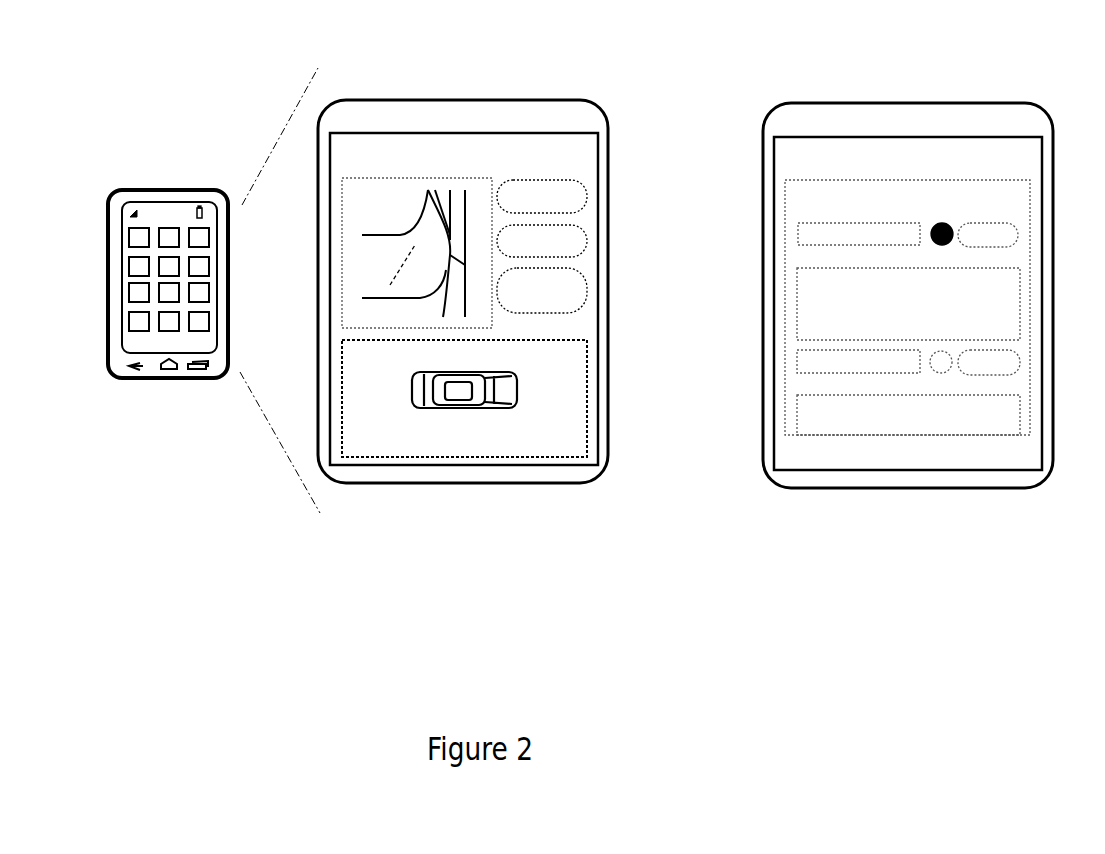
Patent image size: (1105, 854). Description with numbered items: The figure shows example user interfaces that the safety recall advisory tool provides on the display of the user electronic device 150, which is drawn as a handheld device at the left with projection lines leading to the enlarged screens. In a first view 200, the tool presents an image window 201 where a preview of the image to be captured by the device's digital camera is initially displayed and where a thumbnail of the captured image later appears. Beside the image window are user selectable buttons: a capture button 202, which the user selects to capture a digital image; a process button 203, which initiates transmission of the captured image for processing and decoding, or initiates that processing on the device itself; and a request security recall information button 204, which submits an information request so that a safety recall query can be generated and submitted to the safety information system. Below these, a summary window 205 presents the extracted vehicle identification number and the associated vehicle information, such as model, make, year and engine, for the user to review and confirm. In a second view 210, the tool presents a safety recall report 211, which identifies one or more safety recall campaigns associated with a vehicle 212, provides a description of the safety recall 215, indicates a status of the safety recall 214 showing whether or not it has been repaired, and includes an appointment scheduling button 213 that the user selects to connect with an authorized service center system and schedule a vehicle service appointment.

The user electronic device 150 is at (166, 190).
The first view 200 is at (464, 255).
The image window 201 is at (342, 222).
The capture button 202 is at (587, 196).
The process button 203 is at (587, 240).
The request security recall information button 204 is at (587, 287).
The summary window 205 is at (587, 398).
The second view 210 is at (908, 259).
The safety recall report 211 is at (785, 188).
The vehicle 212 is at (798, 234).
The appointment scheduling button 213 is at (1018, 235).
The status of the safety recall 214 is at (952, 242).
The description of the safety recall 215 is at (797, 290).